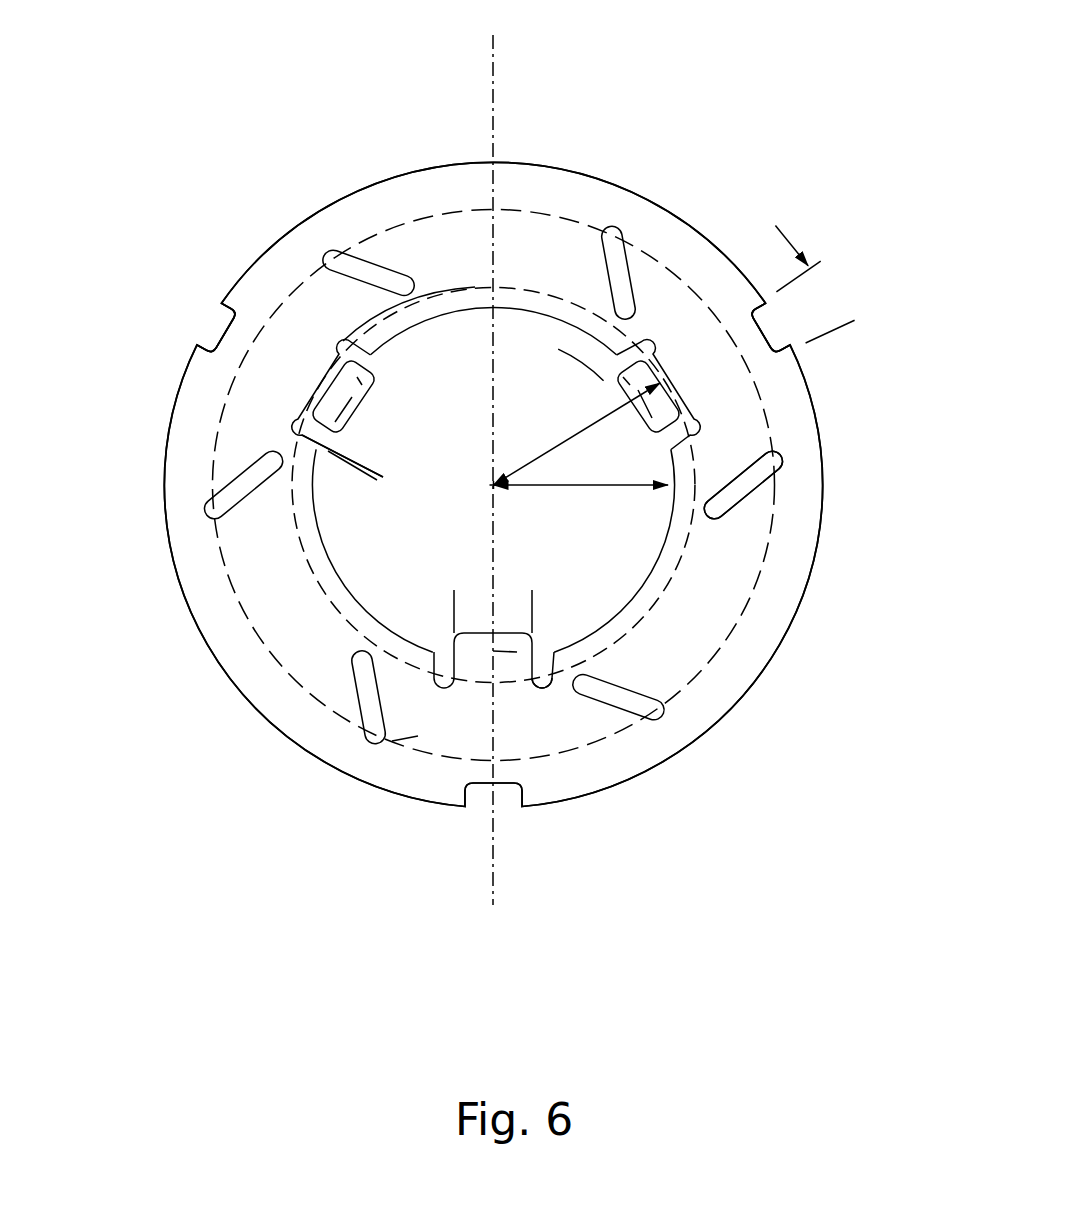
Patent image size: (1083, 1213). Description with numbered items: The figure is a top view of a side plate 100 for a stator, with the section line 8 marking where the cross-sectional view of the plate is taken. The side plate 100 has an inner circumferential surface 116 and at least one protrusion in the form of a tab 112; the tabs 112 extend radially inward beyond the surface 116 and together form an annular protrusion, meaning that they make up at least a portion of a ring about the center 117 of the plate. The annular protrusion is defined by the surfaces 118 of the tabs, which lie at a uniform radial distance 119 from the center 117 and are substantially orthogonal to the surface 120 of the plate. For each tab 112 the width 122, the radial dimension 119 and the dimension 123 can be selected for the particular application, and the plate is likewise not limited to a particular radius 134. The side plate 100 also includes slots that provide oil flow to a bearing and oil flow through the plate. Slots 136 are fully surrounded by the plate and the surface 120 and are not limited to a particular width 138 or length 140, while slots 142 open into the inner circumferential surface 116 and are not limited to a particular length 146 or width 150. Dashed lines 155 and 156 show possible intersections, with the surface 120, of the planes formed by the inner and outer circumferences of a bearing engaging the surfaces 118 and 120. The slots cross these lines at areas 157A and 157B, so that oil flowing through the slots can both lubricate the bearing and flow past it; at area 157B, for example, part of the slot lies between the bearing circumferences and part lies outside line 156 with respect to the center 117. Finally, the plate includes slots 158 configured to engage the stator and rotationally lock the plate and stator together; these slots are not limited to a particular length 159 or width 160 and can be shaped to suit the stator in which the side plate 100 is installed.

The side plate 100 is at (768, 88).
The line 8- 8 is at (495, 40).
The tab 112 is at (355, 505).
The inner circumferential surface 116 is at (513, 312).
The center 117 is at (492, 486).
The surface 118 is at (327, 377).
The radial distance 119 is at (603, 420).
The surface 120 is at (235, 428).
The width 122 is at (568, 602).
The dimension 123 is at (577, 363).
The radius 134 is at (590, 490).
The slot 136 is at (777, 460).
The width 138 is at (768, 480).
The length 140 is at (408, 746).
The slot 142 is at (540, 684).
The length 146 is at (363, 310).
The width 150 is at (342, 487).
The dashed line 155 is at (340, 618).
The dashed line 156 is at (223, 565).
The area 157A is at (654, 352).
The area 157B is at (665, 710).
The slot 158 is at (210, 332).
The length 159 is at (713, 234).
The width 160 is at (844, 328).